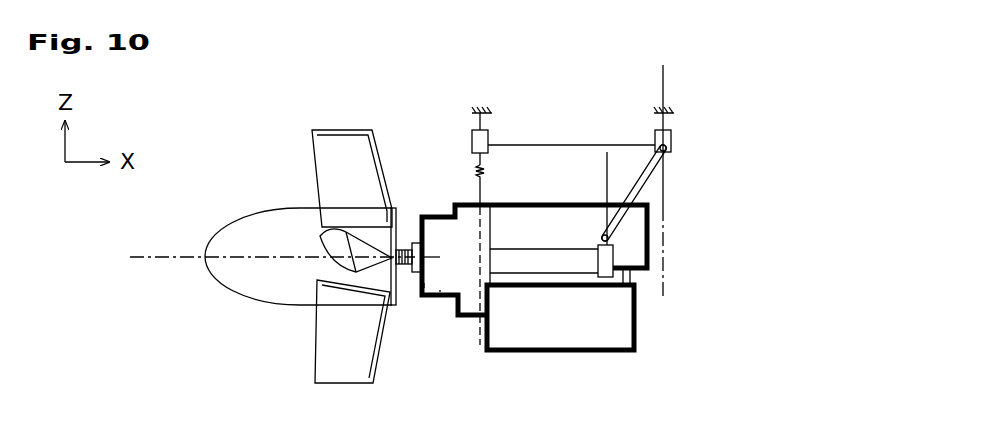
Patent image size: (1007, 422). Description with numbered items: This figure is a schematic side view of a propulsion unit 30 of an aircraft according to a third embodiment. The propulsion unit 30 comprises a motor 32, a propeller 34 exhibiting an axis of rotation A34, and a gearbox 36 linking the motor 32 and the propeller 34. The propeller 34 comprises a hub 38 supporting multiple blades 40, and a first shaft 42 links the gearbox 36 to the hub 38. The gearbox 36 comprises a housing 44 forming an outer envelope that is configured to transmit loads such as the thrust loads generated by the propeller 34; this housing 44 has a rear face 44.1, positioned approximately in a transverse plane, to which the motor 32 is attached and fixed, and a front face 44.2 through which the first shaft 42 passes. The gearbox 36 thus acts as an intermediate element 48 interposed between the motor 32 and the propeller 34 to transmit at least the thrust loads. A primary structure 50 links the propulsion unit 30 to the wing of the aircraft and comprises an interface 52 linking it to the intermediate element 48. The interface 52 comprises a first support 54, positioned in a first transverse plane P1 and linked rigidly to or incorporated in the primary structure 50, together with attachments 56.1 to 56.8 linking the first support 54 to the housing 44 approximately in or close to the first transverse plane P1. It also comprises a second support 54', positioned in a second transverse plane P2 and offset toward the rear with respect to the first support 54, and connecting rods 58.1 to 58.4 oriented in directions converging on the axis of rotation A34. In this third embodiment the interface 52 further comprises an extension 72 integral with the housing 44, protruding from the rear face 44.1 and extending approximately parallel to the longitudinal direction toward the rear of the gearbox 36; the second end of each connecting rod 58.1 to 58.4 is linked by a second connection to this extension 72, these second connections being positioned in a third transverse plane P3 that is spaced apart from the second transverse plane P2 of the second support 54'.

The propulsion unit 30 is at (218, 180).
The motor 32 is at (606, 333).
The propeller 34 is at (243, 307).
The gearbox 36 is at (439, 292).
The hub 38 is at (267, 296).
The blades 40 is at (338, 162).
The first shaft 42 is at (400, 238).
The housing 44 is at (464, 318).
The rear face 44.1 is at (496, 300).
The front face 44.2 is at (414, 232).
The intermediate element 48 is at (421, 286).
The primary structure 50 is at (492, 112).
The interface 52 is at (470, 168).
The first support 54 is at (464, 113).
The second support 54' is at (716, 137).
The attachments 56.1 to 56.8 is at (490, 160).
The connecting rods 58.1 to 58.4 is at (648, 191).
The extension 72 is at (583, 277).
The axis of rotation A34 is at (147, 262).
The first transverse plane P1 is at (480, 330).
The second transverse plane P2 is at (668, 92).
The third transverse plane P3 is at (607, 160).